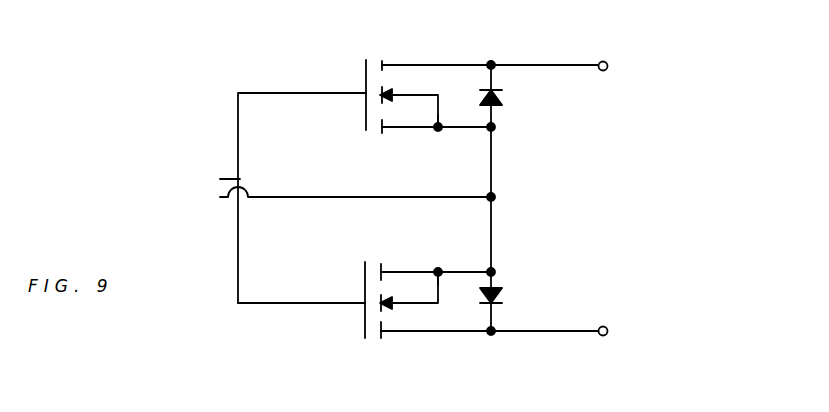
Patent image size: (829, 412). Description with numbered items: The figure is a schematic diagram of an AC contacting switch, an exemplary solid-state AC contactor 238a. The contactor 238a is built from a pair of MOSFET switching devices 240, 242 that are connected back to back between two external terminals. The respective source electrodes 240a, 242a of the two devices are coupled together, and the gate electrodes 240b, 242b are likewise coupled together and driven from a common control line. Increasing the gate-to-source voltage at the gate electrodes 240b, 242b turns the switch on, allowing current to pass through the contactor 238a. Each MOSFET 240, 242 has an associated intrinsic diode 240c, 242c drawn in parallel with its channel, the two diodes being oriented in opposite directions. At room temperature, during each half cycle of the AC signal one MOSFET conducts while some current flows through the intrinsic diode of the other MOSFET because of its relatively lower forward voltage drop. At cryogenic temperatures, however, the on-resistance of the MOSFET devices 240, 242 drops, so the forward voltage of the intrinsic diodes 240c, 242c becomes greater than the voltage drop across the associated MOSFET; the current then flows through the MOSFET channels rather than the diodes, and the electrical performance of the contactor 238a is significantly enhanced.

The solid-state AC contactor 238a is at (625, 116).
The MOSFET switching device 240 is at (420, 59).
The source electrode 240a is at (439, 129).
The gate electrode 240b is at (365, 99).
The intrinsic diode 240c is at (499, 93).
The MOSFET switching device 242 is at (458, 336).
The source electrode 242a is at (440, 269).
The gate electrode 242b is at (365, 311).
The intrinsic diode 242c is at (503, 294).